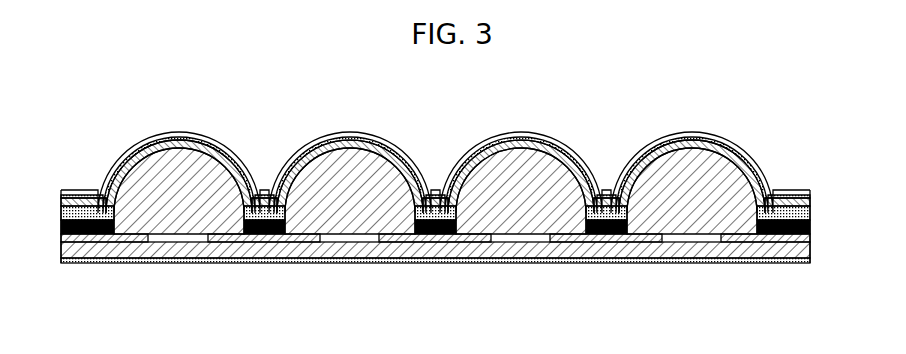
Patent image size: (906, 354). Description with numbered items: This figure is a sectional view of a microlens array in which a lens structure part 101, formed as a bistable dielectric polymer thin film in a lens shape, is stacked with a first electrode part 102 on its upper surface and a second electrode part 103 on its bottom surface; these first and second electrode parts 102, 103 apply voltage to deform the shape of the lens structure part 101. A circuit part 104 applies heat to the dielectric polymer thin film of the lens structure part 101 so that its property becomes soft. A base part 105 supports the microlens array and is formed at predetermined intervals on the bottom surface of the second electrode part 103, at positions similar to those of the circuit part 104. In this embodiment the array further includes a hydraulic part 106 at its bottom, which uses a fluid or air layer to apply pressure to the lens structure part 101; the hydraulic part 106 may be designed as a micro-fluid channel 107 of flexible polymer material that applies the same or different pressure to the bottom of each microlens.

The lens structure part 101 is at (519, 135).
The first electrode part 102 is at (351, 135).
The second electrode part 103 is at (395, 152).
The circuit part 104 is at (260, 193).
The base part 105 is at (88, 247).
The hydraulic part 106 is at (186, 158).
The micro-fluid channel 107 is at (227, 243).